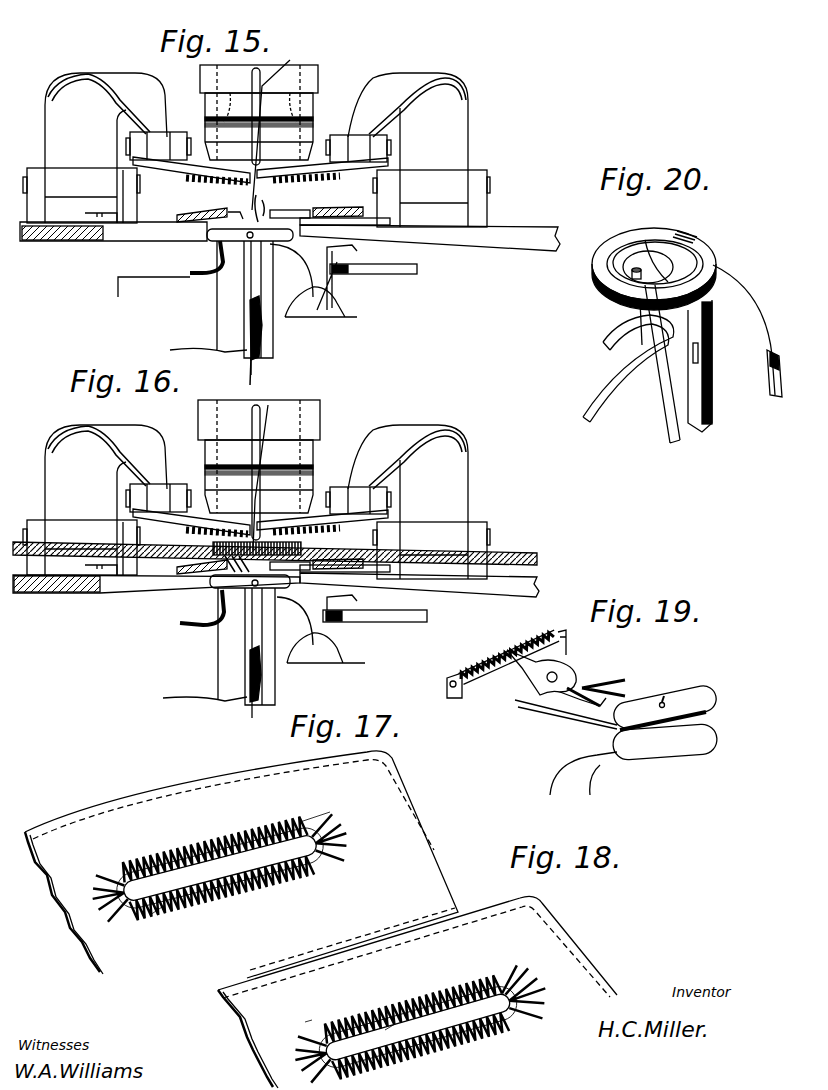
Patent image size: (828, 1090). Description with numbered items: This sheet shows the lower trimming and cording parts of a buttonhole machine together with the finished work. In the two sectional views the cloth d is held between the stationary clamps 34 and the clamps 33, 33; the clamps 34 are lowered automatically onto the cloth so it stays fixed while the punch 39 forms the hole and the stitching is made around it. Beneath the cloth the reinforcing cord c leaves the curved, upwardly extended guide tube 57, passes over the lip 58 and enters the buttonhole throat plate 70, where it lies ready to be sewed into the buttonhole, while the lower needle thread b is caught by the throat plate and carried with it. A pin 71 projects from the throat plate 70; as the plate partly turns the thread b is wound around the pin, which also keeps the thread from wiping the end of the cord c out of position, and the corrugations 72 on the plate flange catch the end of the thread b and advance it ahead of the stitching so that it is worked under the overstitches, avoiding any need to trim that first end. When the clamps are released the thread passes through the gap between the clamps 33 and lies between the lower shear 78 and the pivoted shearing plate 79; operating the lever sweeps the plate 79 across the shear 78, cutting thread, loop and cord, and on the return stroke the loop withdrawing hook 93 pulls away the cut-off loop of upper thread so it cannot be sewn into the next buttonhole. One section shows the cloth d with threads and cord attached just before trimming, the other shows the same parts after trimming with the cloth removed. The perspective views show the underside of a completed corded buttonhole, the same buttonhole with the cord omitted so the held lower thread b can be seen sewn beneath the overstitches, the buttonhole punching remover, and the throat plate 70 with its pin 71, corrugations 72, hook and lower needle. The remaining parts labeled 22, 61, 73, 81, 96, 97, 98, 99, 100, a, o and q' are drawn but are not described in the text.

In FIG. 15, the needle bar 22 is at (283, 126).
In FIG. 15, the clamps 33 is at (150, 160).
In FIG. 15, the clamps 34 is at (428, 66).
In FIG. 15, the punch 39 is at (315, 108).
In FIG. 15, the guide tube 57 is at (264, 358).
In FIG. 15, the lip 58 is at (250, 312).
In FIG. 16, the lip 58 is at (240, 698).
In FIG. 20, the lip 58 is at (769, 382).
In FIG. 20, the thread blade 61 is at (660, 402).
In FIG. 15, the buttonhole throat plate 70 is at (216, 242).
In FIG. 20, the buttonhole throat plate 70 is at (660, 232).
In FIG. 20, the pin 71 is at (635, 268).
In FIG. 20, the corrugations 72 is at (690, 240).
In FIG. 15, the thread loop guide 73 is at (212, 272).
In FIG. 20, the thread loop guide 73 is at (612, 340).
In FIG. 15, the lower shear 78 is at (206, 184).
In FIG. 15, the shearing plate 79 is at (332, 183).
In FIG. 15, the slide bar 81 is at (400, 274).
In FIG. 16, the slide bar 81 is at (410, 622).
In FIG. 15, the loop withdrawing hook 93 is at (344, 252).
In FIG. 16, the loop withdrawing hook 93 is at (344, 602).
In FIG. 19, the cutter lever 96 is at (567, 673).
In FIG. 19, the spring 97 is at (533, 648).
In FIG. 19, the fork 98 is at (607, 687).
In FIG. 19, the cutter block 99 is at (690, 692).
In FIG. 19, the pin 100 is at (662, 702).
In FIG. 15, the needle thread a is at (261, 199).
In FIG. 16, the needle thread a is at (255, 646).
In FIG. 15, the lower needle thread b is at (269, 204).
In FIG. 16, the lower needle thread b is at (252, 571).
In FIG. 17, the lower needle thread b is at (163, 846).
In FIG. 18, the lower needle thread b is at (383, 1000).
In FIG. 20, the lower needle thread b is at (689, 366).
In FIG. 15, the reinforcing cord c is at (237, 214).
In FIG. 16, the reinforcing cord c is at (230, 566).
In FIG. 17, the reinforcing cord c is at (295, 822).
In FIG. 20, the reinforcing cord c is at (760, 322).
In FIG. 16, the cloth d is at (520, 553).
In FIG. 18, the buttonhole o is at (305, 1023).
In FIG. 17, the stitch q' is at (150, 932).
In FIG. 18, the stitch q' is at (379, 1042).